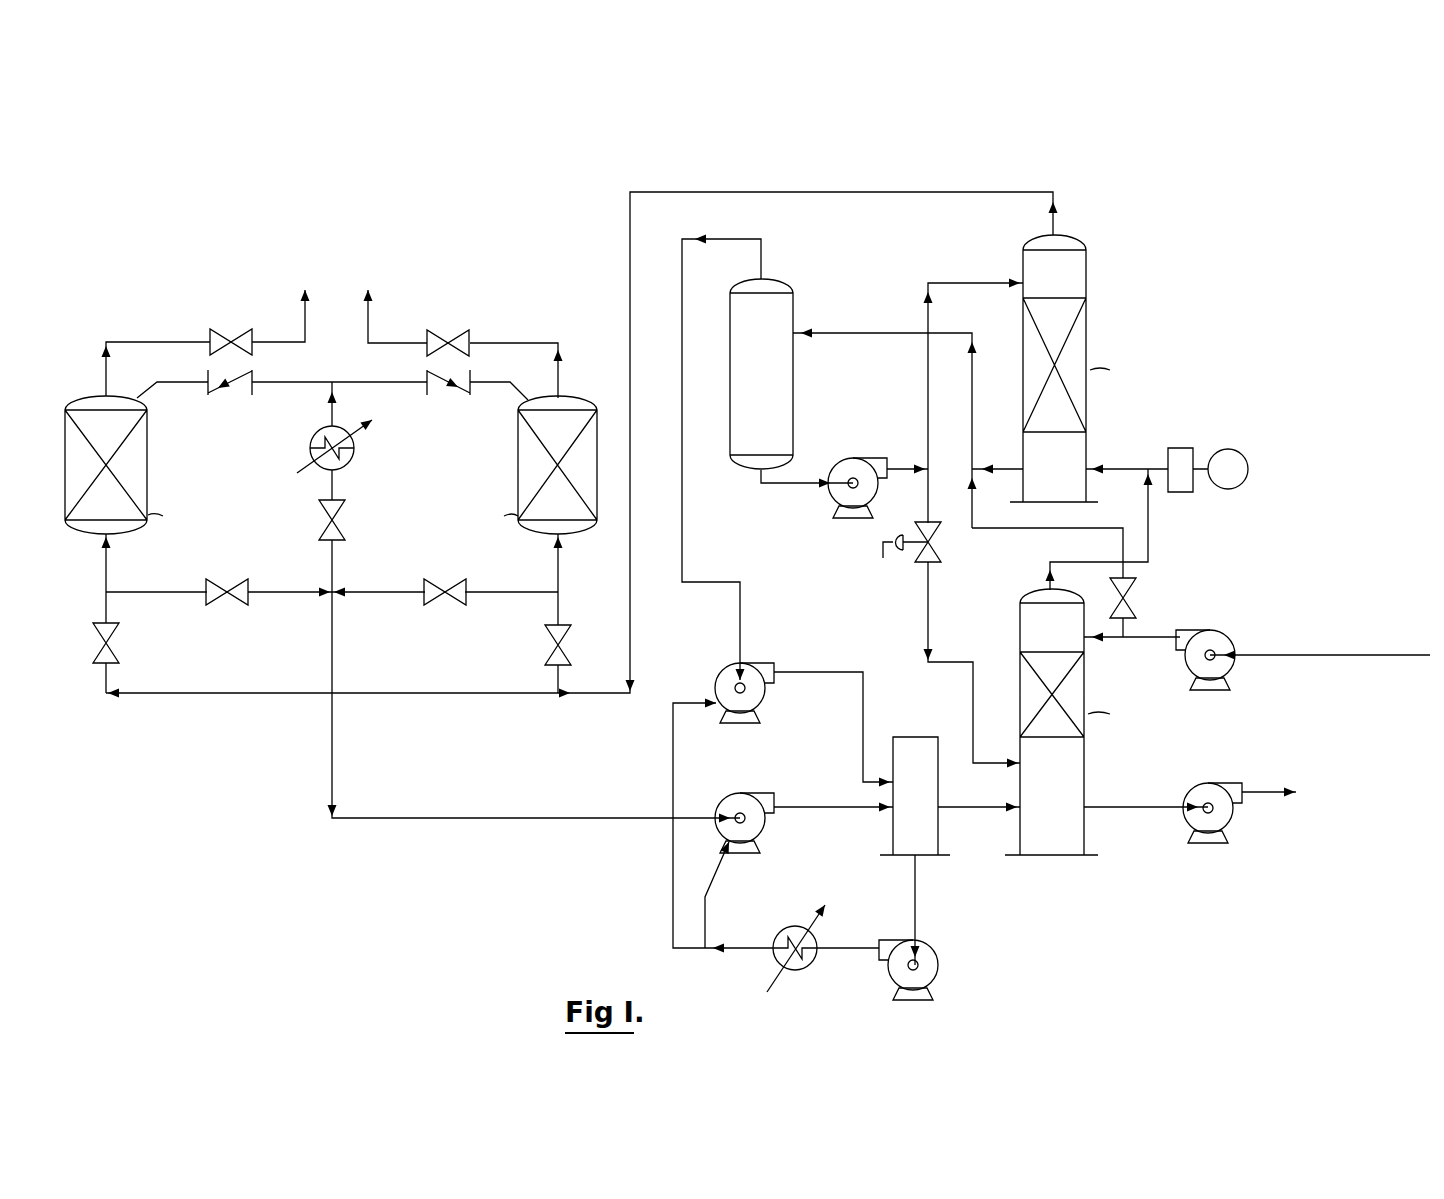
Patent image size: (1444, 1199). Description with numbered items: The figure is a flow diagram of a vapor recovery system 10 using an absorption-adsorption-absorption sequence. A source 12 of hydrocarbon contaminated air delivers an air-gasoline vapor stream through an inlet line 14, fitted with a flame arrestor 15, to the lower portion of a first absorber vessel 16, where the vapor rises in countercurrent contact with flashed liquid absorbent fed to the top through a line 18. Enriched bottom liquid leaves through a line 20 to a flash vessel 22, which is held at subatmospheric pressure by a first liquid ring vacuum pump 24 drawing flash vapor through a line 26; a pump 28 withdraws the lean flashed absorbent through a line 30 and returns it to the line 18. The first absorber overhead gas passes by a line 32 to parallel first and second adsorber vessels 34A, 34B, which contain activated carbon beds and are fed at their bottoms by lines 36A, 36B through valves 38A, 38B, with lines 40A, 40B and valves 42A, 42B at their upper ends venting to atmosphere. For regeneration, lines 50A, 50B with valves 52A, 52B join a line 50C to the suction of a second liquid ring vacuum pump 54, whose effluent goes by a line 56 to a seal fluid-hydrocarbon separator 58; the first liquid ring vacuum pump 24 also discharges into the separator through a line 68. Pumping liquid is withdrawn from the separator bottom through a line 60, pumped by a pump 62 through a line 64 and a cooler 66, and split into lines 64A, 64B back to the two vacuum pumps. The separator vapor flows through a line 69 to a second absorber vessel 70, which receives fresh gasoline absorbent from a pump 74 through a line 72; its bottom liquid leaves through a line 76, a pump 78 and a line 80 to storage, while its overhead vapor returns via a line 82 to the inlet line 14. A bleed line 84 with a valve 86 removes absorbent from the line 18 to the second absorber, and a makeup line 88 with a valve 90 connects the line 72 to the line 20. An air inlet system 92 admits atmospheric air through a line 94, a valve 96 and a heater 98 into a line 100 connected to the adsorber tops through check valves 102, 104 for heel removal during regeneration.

The vapor recovery system 10 is at (92, 328).
The source of hydrocarbon contaminated air 12 is at (1232, 449).
The inlet line 14 is at (1130, 469).
The flame arrestor 15 is at (1182, 448).
The first absorber vessel 16 is at (1090, 282).
The line 18 is at (982, 258).
The line 20 is at (845, 333).
The flash vessel 22 is at (783, 283).
The first liquid ring vacuum pump 24 is at (760, 660).
The line 26 is at (732, 239).
The pump 28 is at (868, 458).
The line 30 is at (802, 480).
The line 32 is at (418, 692).
The first adsorber vessel 34A is at (518, 476).
The second adsorber vessel 34B is at (148, 466).
The line 36A is at (562, 568).
The line 36B is at (110, 563).
The valve 38A is at (565, 648).
The valve 38B is at (112, 648).
The line 40A is at (562, 377).
The line 40B is at (104, 374).
The valve 42A is at (444, 334).
The valve 42B is at (231, 330).
The line 50A is at (508, 590).
The line 50B is at (150, 590).
The line 50C is at (336, 632).
The valve 52A is at (439, 578).
The valve 52B is at (237, 578).
The second liquid ring vacuum pump 54 is at (766, 828).
The line 56 is at (805, 807).
The seal fluid-hydrocarbon separator 58 is at (915, 737).
The line 60 is at (918, 898).
The pump 62 is at (940, 945).
The line 64 is at (838, 948).
The line 64A is at (670, 902).
The line 64B is at (708, 888).
The cooler 66 is at (784, 928).
The line 68 is at (824, 672).
The line 69 is at (973, 807).
The second absorber vessel 70 is at (1020, 602).
The line 72 is at (1160, 656).
The pump 74 is at (1200, 630).
The line 76 is at (1114, 807).
The pump 78 is at (1210, 783).
The line 80 is at (1262, 792).
The line 82 is at (1150, 536).
The line 84 is at (925, 606).
The valve 86 is at (940, 548).
The line 88 is at (1022, 528).
The valve 90 is at (1134, 606).
The air inlet system 92 is at (320, 413).
The line 94 is at (335, 548).
The valve 96 is at (340, 518).
The heater 98 is at (356, 452).
The line 100 is at (306, 384).
The valve 102 is at (458, 395).
The valve 104 is at (228, 386).